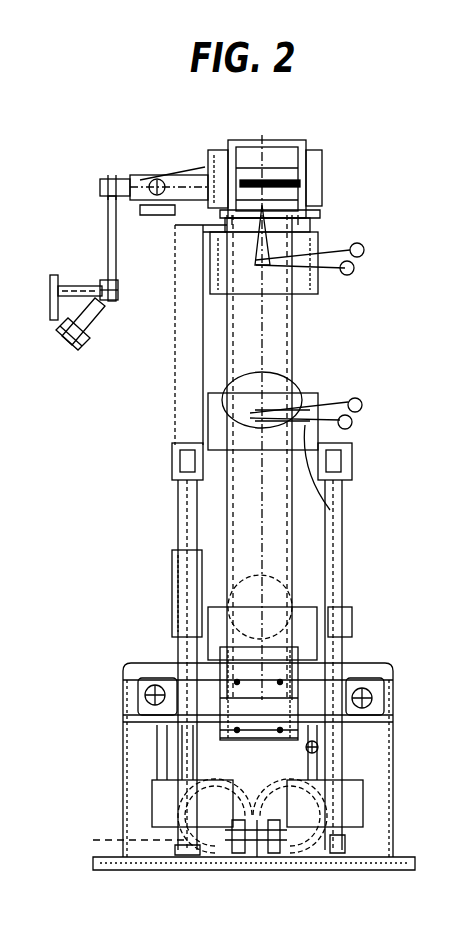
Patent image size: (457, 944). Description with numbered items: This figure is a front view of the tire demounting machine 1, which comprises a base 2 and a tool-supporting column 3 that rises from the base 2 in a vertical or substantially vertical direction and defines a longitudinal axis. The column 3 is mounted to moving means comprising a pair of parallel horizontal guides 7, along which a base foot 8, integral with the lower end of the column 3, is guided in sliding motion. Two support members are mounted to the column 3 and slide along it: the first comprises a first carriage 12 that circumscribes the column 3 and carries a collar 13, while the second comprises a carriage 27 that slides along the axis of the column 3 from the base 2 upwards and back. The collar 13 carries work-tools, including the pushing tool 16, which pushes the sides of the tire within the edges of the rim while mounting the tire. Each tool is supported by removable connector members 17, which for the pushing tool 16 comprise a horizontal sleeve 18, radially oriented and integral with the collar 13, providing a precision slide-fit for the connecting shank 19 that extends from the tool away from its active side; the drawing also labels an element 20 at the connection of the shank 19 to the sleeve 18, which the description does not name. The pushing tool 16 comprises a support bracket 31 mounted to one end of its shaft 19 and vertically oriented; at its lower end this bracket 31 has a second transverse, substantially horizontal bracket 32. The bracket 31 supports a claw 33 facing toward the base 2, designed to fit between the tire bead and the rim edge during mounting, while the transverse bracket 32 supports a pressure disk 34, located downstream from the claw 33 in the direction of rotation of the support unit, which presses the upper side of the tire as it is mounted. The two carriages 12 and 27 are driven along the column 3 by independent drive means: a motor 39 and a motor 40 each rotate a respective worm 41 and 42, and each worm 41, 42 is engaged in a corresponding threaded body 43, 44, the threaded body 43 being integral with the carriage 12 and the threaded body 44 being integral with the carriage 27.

The tire demounting machine 1 is at (138, 122).
The base 2 is at (122, 763).
The tool-supporting column 3 is at (218, 372).
The parallel horizontal guides 7 is at (142, 663).
The base foot 8 is at (168, 660).
The first carriage 12 is at (280, 285).
The collar 13 is at (320, 168).
The pushing tool 16 is at (70, 362).
The removable connector members 17 is at (158, 212).
The horizontal sleeve 18 is at (205, 150).
The connecting shank 19 is at (125, 185).
The arm 20 is at (162, 175).
The carriage 27 is at (245, 653).
The support bracket 31 is at (110, 228).
The second transverse bracket 32 is at (106, 305).
The claw 33 is at (50, 305).
The pressure disk 34 is at (63, 336).
The motor 39 is at (348, 843).
The motor 40 is at (118, 841).
The worm 41 is at (312, 407).
The worm 42 is at (177, 527).
The threaded body 43 is at (348, 627).
The threaded body 44 is at (197, 312).